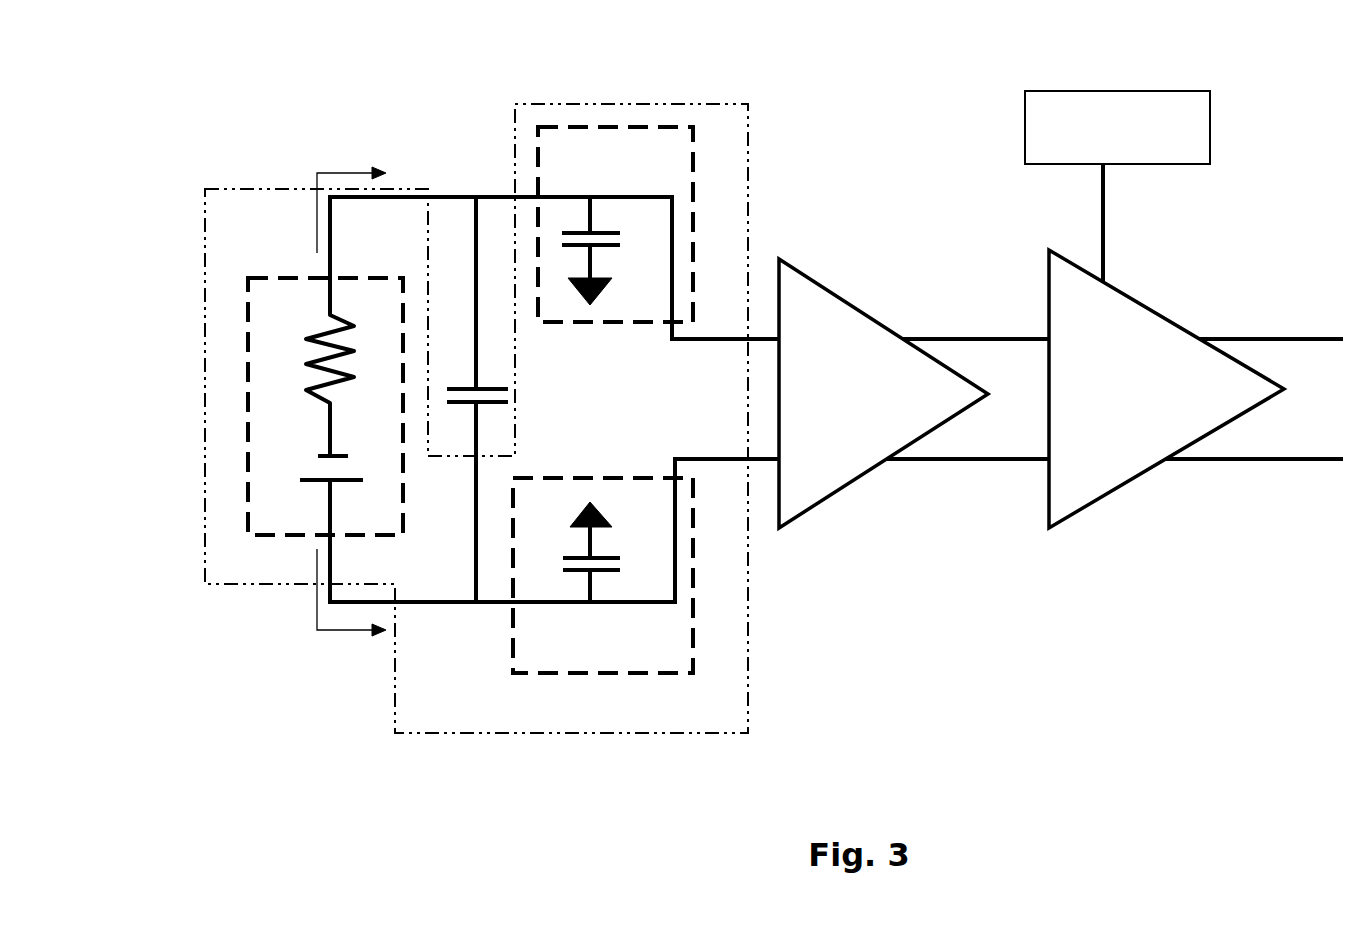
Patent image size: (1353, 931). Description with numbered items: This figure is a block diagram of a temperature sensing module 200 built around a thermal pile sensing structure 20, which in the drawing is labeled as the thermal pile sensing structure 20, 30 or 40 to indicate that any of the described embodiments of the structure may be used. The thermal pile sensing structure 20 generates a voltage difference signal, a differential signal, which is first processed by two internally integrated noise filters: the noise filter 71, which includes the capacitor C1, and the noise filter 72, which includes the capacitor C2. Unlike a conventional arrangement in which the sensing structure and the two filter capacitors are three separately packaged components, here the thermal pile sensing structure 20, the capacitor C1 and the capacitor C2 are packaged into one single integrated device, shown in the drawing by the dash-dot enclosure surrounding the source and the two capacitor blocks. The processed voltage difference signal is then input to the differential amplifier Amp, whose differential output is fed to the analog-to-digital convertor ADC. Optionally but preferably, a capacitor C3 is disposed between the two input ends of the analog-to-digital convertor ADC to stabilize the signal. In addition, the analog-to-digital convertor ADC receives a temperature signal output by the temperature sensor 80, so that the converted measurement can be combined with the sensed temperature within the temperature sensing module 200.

The temperature sensing module 200 is at (774, 392).
The thermal pile sensing structure 20 is at (476, 418).
The sensing unit 30 is at (476, 418).
The sensing unit 40 is at (424, 190).
The noise filter 71 is at (636, 224).
The noise filter 72 is at (603, 601).
The temperature sensor 80 is at (1117, 187).
The capacitor C1 is at (600, 249).
The capacitor C2 is at (583, 557).
The capacitor C3 is at (466, 388).
The differential amplifier Amp is at (815, 503).
The analog-to-digital convertor ADC is at (1080, 505).